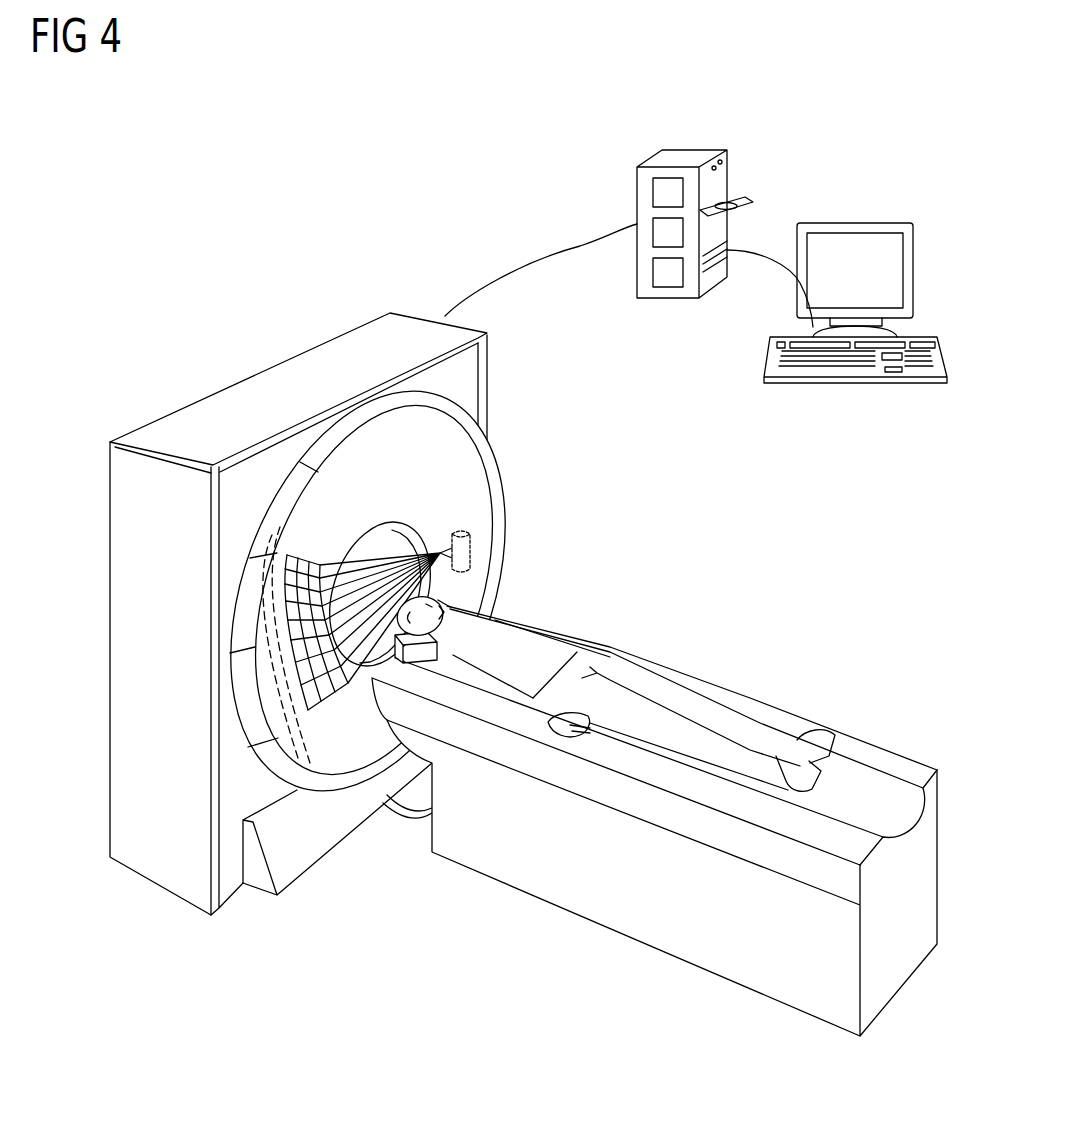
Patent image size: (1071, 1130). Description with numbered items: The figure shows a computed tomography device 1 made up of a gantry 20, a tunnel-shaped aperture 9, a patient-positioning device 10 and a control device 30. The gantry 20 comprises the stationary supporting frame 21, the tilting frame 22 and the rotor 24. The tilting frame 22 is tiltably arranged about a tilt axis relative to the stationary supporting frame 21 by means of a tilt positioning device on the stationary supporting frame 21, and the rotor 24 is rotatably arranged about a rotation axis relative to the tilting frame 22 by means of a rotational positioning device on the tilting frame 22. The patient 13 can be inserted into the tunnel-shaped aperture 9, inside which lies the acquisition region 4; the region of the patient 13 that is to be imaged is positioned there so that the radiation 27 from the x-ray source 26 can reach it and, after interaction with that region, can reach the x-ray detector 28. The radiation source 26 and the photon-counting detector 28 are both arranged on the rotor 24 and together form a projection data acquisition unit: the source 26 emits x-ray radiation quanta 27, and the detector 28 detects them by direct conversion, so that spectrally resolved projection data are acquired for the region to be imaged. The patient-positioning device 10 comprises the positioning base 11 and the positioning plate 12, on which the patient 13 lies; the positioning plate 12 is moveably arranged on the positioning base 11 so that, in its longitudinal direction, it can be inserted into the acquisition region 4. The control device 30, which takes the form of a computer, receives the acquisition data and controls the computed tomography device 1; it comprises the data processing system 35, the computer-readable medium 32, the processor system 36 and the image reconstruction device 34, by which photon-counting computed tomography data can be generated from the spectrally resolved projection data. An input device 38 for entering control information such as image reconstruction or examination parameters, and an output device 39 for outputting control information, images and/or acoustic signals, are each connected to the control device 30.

The computed tomography device 1 is at (165, 345).
The acquisition region 4 is at (367, 550).
The tunnel-shaped aperture 9 is at (390, 564).
The patient-positioning device 10 is at (548, 942).
The positioning base 11 is at (679, 941).
The positioning plate 12 is at (900, 767).
The patient 13 is at (688, 702).
The gantry 20 is at (100, 752).
The stationary supporting frame 21 is at (157, 862).
The tilting frame 22 is at (314, 370).
The rotor 24 is at (477, 472).
The radiation source 26 is at (472, 552).
The radiation 27 is at (405, 538).
The photon-counting detector 28 is at (304, 732).
The control device 30 is at (683, 160).
The computer-readable medium 32 is at (727, 198).
The image reconstruction device 34 is at (657, 195).
The data processing system 35 is at (660, 233).
The processor system 36 is at (670, 277).
The input device 38 is at (850, 383).
The output device 39 is at (855, 233).